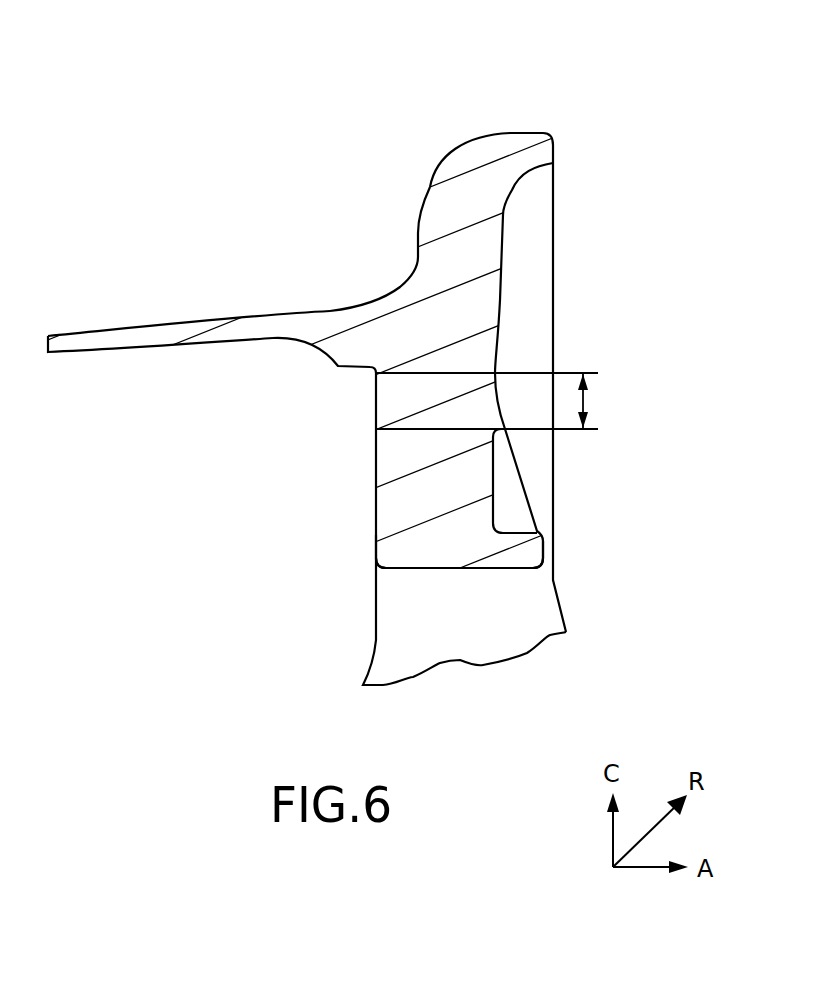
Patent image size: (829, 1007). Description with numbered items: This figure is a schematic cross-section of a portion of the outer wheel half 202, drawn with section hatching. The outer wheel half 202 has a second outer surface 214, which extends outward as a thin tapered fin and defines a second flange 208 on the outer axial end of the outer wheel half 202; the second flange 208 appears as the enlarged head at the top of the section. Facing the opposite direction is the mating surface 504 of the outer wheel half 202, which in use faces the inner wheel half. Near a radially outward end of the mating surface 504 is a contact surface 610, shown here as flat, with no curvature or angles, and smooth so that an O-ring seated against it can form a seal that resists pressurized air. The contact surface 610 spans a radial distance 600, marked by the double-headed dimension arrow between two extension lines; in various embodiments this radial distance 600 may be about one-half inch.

The outer wheel half 202 is at (242, 154).
The second flange 208 is at (508, 145).
The second outer surface 214 is at (160, 325).
The contact surface 610 is at (365, 380).
The radial distance 600 is at (585, 402).
The mating surface 504 is at (376, 541).